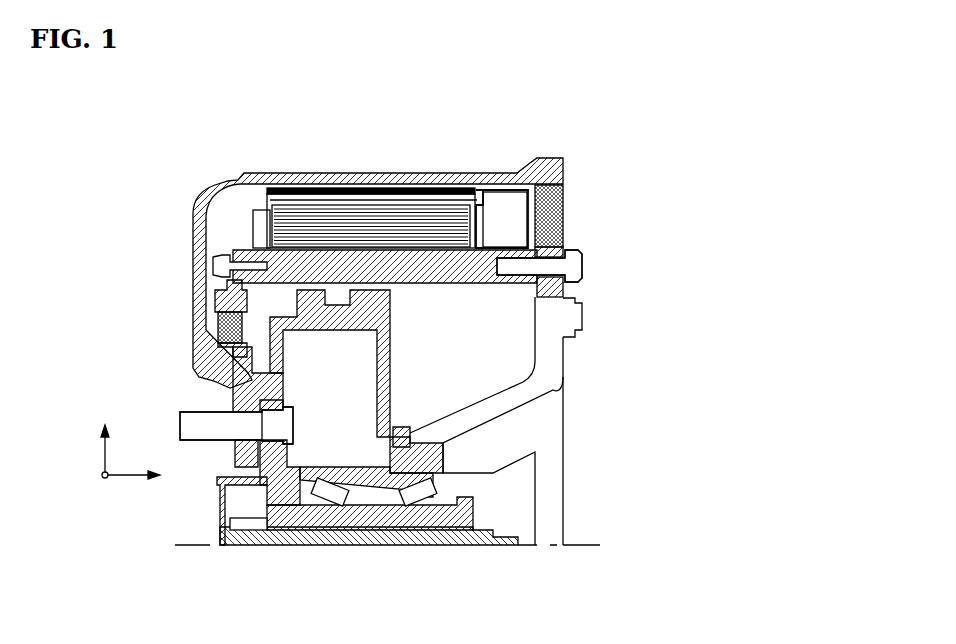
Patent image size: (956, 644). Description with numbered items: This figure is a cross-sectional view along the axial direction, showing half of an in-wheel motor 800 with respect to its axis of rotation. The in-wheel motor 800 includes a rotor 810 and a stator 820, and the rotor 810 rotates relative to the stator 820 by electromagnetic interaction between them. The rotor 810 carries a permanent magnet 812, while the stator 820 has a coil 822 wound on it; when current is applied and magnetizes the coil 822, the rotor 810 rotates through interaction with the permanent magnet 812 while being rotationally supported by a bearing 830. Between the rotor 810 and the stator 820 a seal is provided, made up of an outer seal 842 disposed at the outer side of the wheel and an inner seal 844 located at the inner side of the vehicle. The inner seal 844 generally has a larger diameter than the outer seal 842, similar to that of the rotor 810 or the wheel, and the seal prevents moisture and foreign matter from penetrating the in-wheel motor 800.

The in-wheel motor 800 is at (192, 168).
The rotor 810 is at (297, 175).
The permanent magnet 812 is at (362, 190).
The coil 822 is at (397, 220).
The stator 820 is at (440, 257).
The bearing 830 is at (372, 520).
The outer seal 842 is at (225, 318).
The inner seal 844 is at (553, 217).